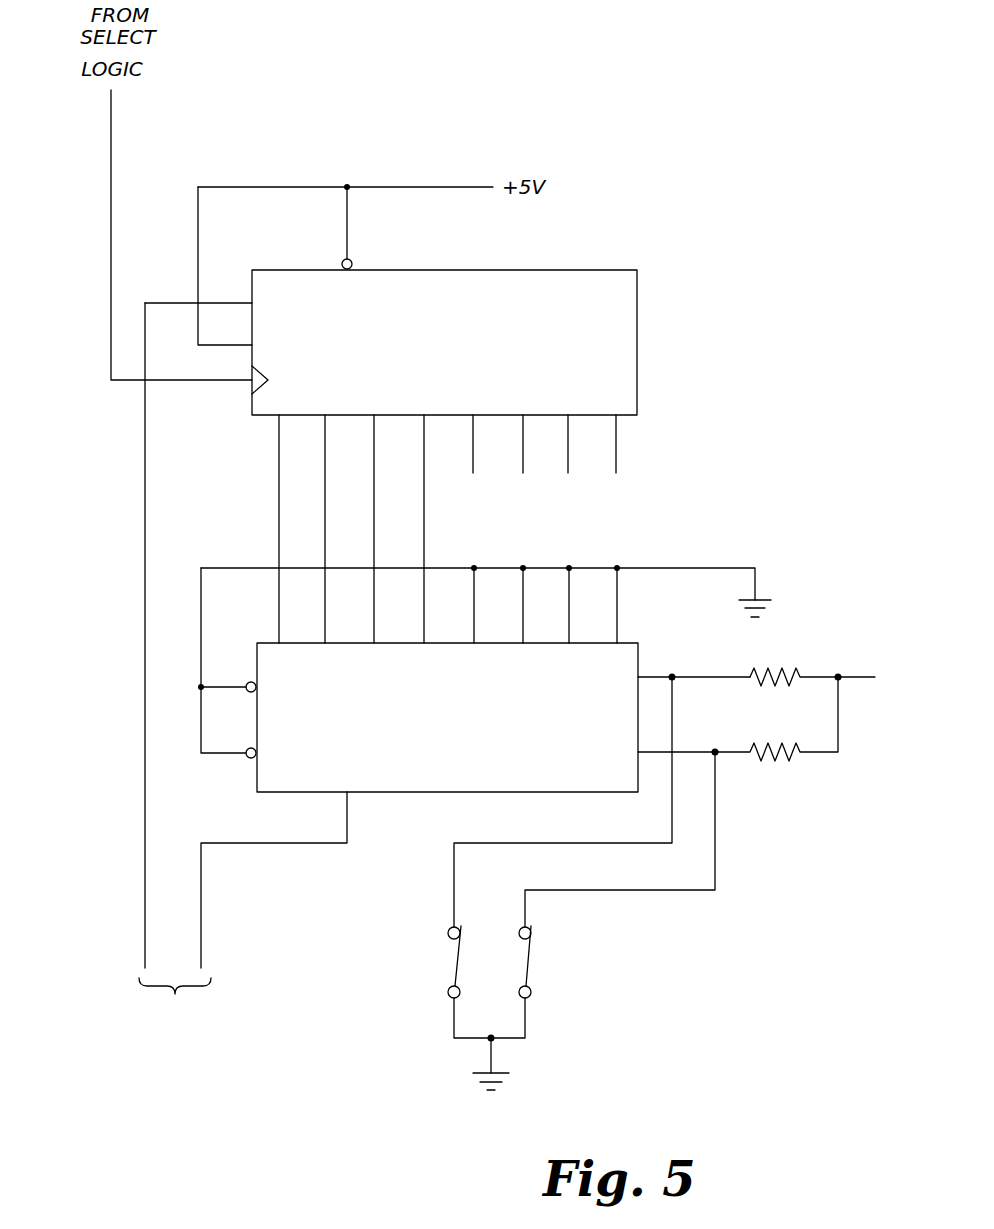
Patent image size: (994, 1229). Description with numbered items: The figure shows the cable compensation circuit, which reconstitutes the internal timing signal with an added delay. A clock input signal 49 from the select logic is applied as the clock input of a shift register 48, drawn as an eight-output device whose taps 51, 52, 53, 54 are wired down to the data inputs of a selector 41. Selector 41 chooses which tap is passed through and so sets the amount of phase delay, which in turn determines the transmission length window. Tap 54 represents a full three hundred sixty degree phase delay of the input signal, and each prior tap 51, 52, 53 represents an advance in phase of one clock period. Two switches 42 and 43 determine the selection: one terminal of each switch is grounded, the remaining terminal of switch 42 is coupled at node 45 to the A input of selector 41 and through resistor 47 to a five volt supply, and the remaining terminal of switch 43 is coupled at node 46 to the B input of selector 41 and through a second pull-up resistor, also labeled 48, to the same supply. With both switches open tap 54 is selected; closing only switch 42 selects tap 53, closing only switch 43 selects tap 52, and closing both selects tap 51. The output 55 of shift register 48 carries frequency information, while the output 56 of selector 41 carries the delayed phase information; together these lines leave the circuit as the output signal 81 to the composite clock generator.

The selector 41 is at (438, 792).
The switch 42 is at (453, 969).
The switch 43 is at (529, 960).
The node 45 is at (672, 677).
The node 46 is at (718, 755).
The resistor 47 is at (775, 668).
The shift register 48 is at (633, 318).
The clock input signal 49 is at (111, 145).
The tap 51 is at (279, 525).
The tap 52 is at (325, 476).
The tap 53 is at (374, 510).
The tap 54 is at (424, 540).
The output of shift register 55 is at (145, 913).
The output of selector 56 is at (317, 845).
The output signal 81 is at (203, 990).